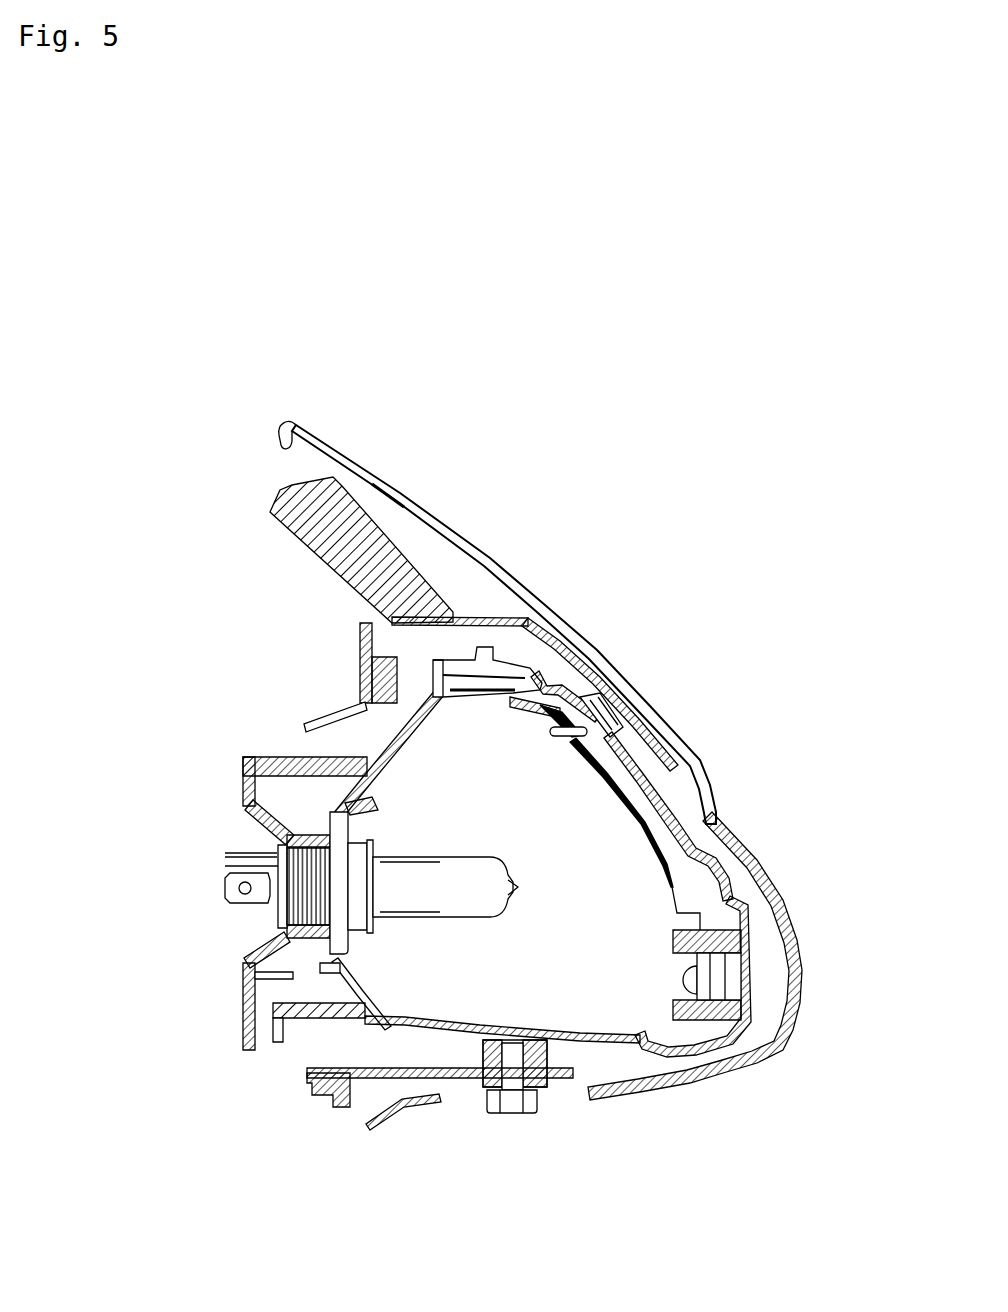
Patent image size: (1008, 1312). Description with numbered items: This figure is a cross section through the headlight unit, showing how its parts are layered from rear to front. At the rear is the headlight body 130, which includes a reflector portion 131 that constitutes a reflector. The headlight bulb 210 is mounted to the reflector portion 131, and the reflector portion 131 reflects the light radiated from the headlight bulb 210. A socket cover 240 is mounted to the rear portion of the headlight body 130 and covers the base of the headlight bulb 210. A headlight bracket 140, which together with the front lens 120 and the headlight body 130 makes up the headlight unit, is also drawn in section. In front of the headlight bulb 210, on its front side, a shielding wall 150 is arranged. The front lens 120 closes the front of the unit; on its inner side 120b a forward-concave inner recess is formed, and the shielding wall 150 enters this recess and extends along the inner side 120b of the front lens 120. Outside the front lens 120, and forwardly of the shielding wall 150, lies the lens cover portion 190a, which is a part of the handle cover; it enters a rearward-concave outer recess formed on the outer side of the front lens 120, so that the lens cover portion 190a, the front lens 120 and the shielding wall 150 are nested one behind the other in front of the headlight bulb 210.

The front lens 120 is at (753, 960).
The inner side of front lens 120b is at (668, 828).
The headlight body 130 is at (395, 1035).
The reflector portion 131 is at (523, 1025).
The headlight bracket 140 is at (352, 668).
The shielding wall 150 is at (678, 760).
The lens cover portion 190a is at (783, 893).
The headlight bulb 210 is at (292, 868).
The socket cover 240 is at (243, 802).